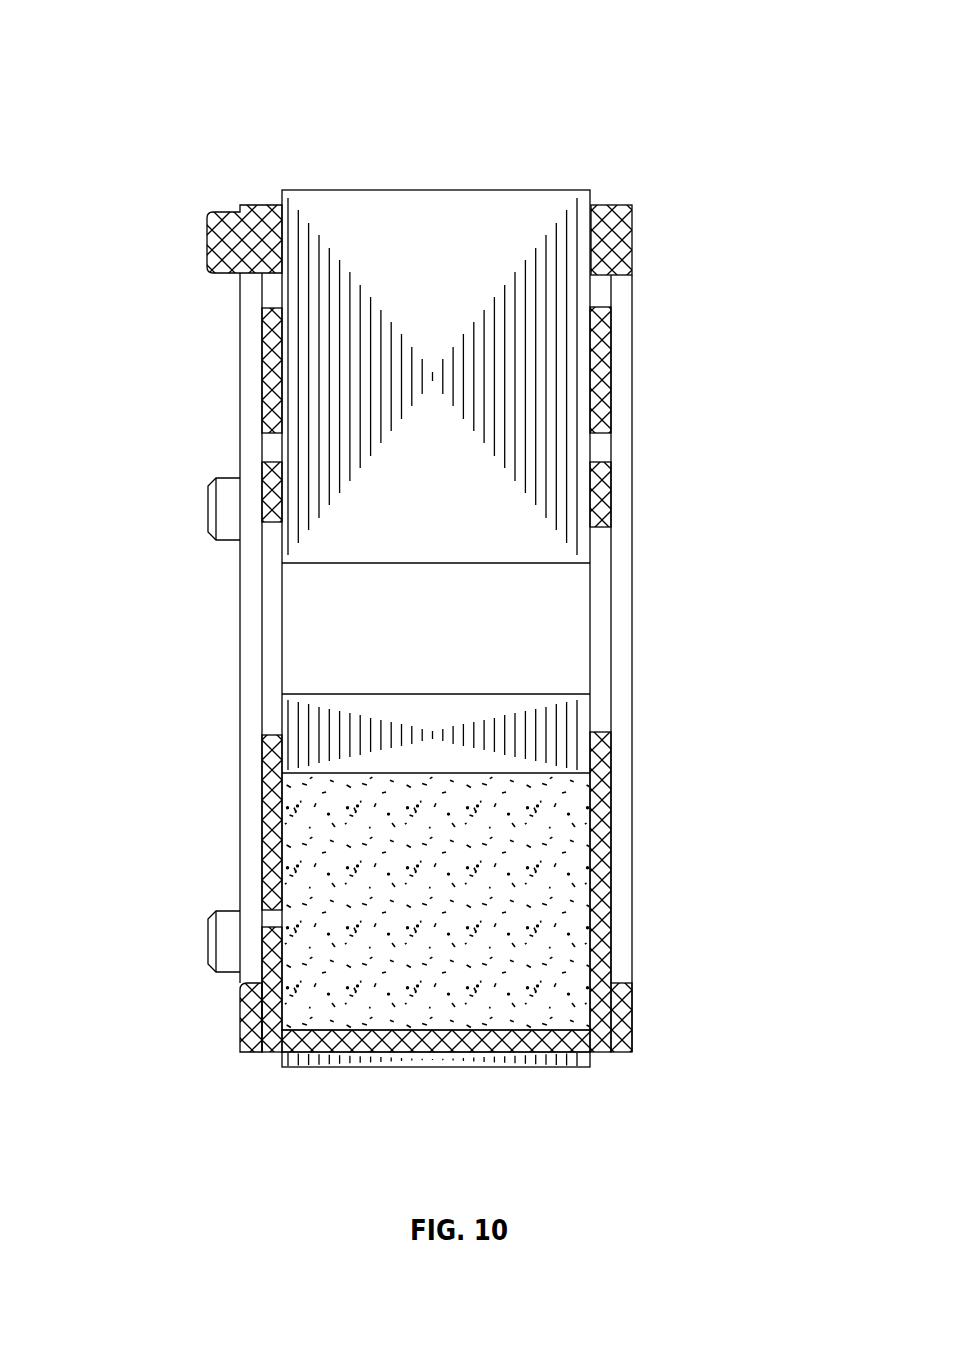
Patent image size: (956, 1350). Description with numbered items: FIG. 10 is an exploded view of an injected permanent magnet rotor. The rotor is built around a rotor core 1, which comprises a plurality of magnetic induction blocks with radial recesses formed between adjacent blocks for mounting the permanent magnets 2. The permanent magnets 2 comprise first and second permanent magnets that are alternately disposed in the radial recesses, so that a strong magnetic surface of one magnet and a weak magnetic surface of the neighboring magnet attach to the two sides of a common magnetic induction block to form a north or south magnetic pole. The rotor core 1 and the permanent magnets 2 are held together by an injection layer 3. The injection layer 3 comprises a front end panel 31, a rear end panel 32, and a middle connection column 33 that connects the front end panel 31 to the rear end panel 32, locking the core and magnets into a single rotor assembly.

The rotor core 1 is at (427, 228).
The permanent magnets 2 is at (474, 920).
The injection layer 3 is at (213, 228).
The front end panel 31 is at (270, 797).
The rear end panel 32 is at (610, 950).
The middle connection column 33 is at (500, 1037).